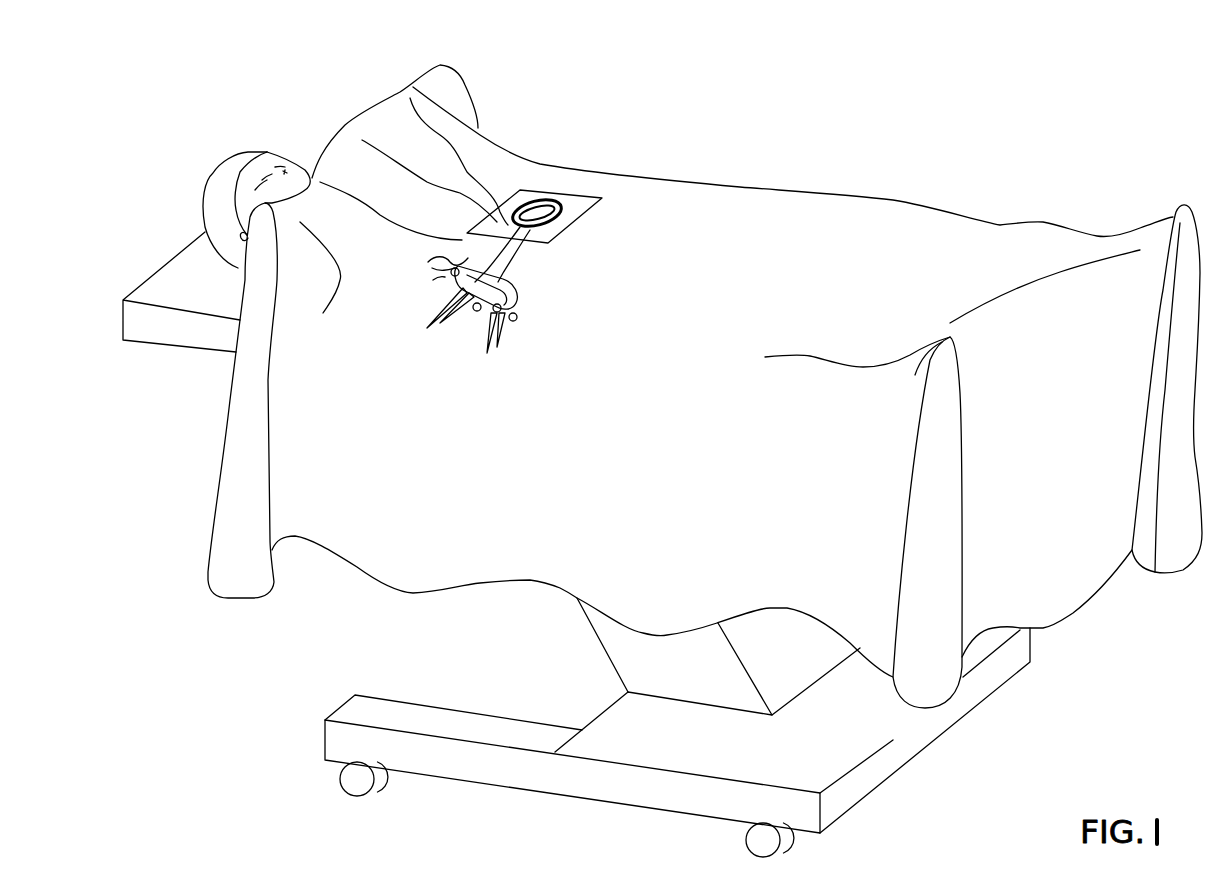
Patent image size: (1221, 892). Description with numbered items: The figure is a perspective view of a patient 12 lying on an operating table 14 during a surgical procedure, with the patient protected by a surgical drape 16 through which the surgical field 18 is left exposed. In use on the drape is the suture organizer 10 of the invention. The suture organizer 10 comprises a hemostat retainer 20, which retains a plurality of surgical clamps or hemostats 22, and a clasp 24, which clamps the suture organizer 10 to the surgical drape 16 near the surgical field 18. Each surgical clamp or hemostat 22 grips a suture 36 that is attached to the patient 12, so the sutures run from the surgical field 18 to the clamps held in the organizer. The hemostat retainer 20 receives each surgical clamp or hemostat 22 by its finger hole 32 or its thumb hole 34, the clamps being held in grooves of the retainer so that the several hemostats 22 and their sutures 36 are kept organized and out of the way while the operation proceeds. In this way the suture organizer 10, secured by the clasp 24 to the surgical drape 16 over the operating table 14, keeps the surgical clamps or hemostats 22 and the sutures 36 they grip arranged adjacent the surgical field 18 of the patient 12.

The suture organizer 10 is at (537, 315).
The patient 12 is at (280, 132).
The operating table 14 is at (920, 735).
The surgical drape 16 is at (773, 213).
The surgical field 18 is at (552, 196).
The hemostat retainer 20 is at (523, 290).
The surgical clamp or hemostat 22 is at (427, 310).
The clasp 24 is at (432, 275).
The finger hole 32 is at (457, 298).
The thumb hole 34 is at (468, 322).
The suture 36 is at (507, 238).